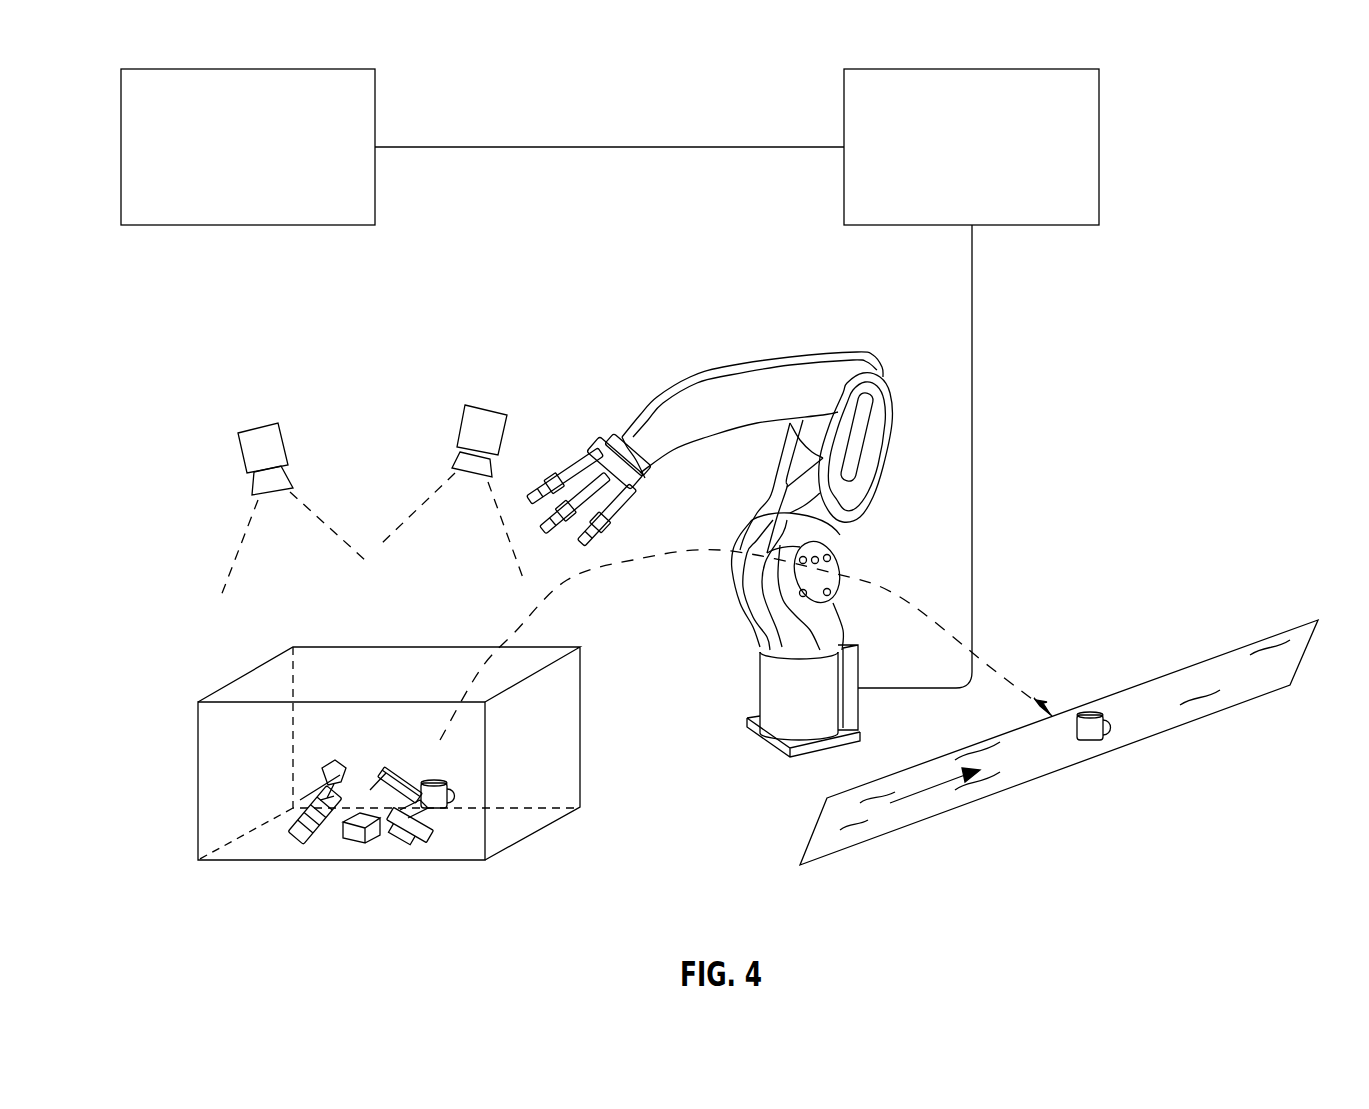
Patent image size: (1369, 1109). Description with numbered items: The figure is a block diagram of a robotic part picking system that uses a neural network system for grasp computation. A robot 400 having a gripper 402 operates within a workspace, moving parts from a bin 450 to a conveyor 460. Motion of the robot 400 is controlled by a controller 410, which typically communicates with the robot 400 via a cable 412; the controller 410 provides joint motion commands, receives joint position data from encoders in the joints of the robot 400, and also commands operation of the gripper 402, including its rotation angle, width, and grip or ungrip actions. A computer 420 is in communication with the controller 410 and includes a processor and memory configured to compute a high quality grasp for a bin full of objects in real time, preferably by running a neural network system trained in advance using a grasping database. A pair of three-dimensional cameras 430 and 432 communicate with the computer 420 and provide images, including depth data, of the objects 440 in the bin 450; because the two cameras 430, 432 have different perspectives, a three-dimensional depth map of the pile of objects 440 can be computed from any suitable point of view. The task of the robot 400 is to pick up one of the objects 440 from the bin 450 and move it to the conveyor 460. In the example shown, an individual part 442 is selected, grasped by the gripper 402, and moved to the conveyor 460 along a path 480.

The robot 400 is at (786, 308).
The gripper 402 is at (622, 522).
The controller 410 is at (1040, 226).
The cable 412 is at (972, 462).
The computer 420 is at (247, 226).
The 3D camera 430 is at (258, 425).
The 3D camera 432 is at (487, 405).
The objects 440 is at (256, 812).
The individual part 442 is at (440, 808).
The bin 450 is at (530, 838).
The conveyor 460 is at (1240, 705).
The path 480 is at (997, 665).